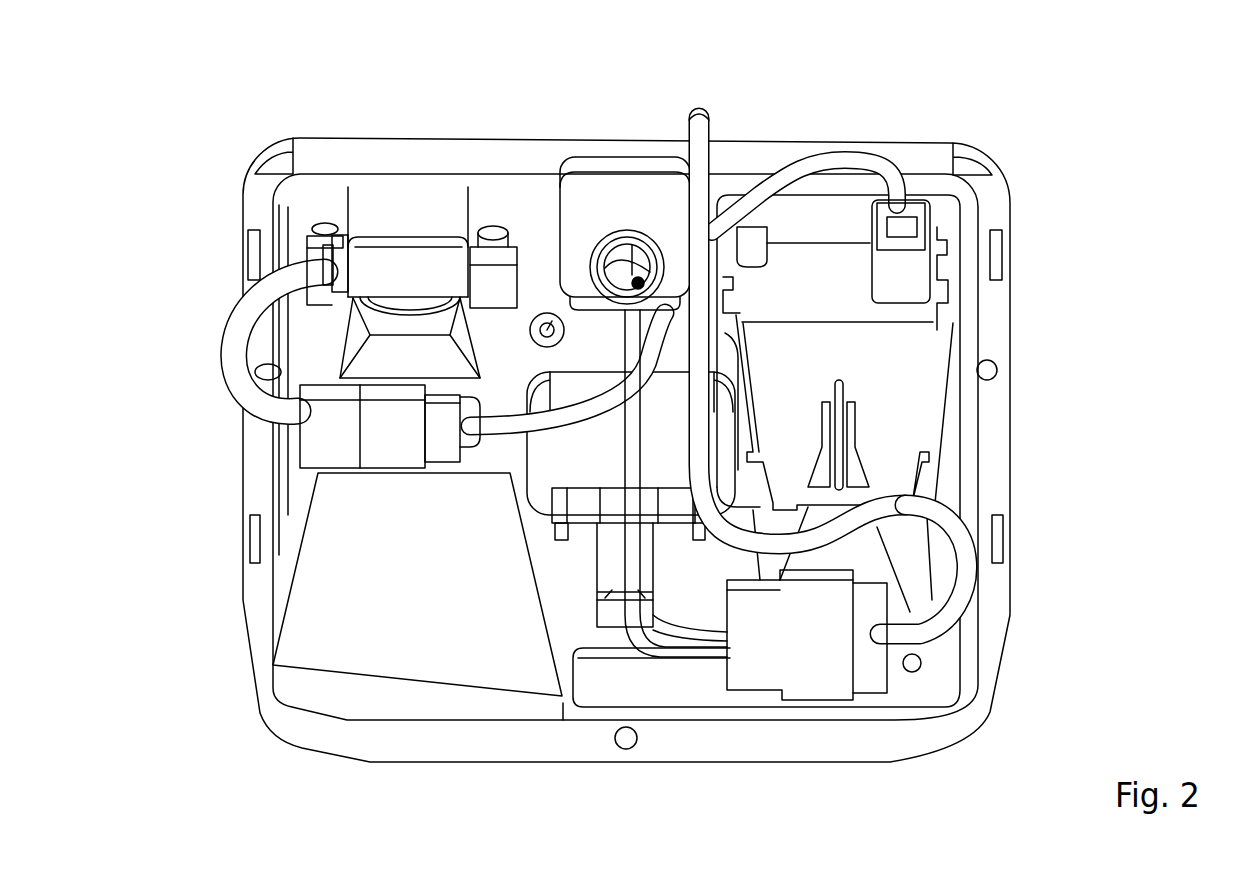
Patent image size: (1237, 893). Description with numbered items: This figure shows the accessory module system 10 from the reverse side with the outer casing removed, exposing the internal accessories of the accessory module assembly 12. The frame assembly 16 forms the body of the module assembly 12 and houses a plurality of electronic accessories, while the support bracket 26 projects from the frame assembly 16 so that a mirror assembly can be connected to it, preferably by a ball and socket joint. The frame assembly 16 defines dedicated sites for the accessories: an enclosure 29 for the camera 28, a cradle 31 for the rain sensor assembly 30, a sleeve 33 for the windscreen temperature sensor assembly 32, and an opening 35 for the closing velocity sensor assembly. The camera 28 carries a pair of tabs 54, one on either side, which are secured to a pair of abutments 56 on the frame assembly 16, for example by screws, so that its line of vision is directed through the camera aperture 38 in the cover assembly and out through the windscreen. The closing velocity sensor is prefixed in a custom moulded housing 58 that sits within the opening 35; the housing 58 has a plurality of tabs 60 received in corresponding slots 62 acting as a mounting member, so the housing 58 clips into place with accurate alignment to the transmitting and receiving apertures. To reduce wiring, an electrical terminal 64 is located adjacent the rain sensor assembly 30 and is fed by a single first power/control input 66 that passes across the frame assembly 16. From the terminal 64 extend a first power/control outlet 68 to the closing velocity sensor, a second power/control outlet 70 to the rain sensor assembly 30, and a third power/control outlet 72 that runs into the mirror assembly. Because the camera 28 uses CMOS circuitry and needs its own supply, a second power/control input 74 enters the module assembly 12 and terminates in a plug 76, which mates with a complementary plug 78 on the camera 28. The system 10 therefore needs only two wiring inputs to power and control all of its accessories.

The accessory module system 10 is at (236, 112).
The accessory module assembly 12 is at (390, 778).
The frame assembly 16 is at (953, 733).
The support bracket 26 is at (630, 185).
The camera 28 is at (388, 215).
The enclosure 29 is at (283, 632).
The rain sensor assembly 30 is at (583, 510).
The cradle 31 is at (543, 495).
The windscreen temperature sensor assembly 32 is at (548, 313).
The sleeve 33 is at (523, 347).
The opening 35 is at (937, 425).
The camera aperture 38 is at (373, 312).
The tabs 54 is at (465, 245).
The abutments 56 is at (247, 328).
The housing 58 is at (905, 380).
The tabs 60 is at (950, 293).
The slots 62 is at (950, 263).
The electrical terminal 64 is at (818, 670).
The first power/control input 66 is at (985, 580).
The first power/control outlet 68 is at (850, 160).
The second power/control outlet 70 is at (678, 647).
The third power/control outlet 72 is at (620, 632).
The second power/control input 74 is at (706, 108).
The plug 76 is at (440, 452).
The plug 78 is at (318, 452).